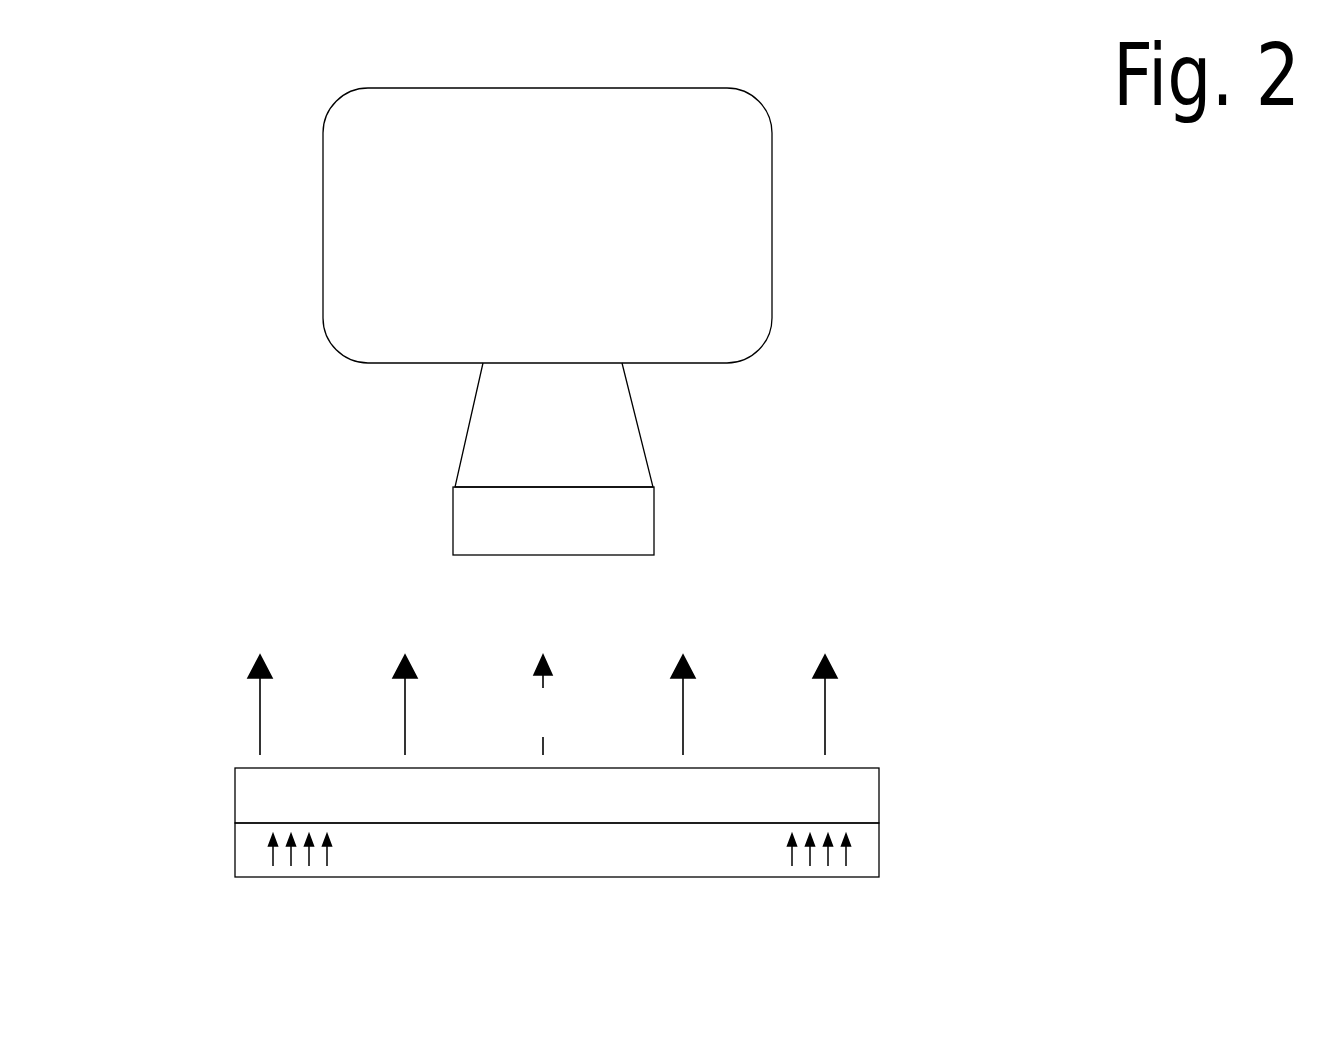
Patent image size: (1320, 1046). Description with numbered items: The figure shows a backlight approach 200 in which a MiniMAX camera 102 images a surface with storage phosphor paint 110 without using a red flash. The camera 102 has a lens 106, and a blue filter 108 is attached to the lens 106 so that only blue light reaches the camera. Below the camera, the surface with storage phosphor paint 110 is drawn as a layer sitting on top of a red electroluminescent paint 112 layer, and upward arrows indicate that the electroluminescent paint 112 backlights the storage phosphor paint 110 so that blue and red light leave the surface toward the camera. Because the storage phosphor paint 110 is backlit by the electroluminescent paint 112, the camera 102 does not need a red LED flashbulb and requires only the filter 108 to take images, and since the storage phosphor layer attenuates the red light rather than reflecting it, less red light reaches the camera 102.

The MiniMAX camera 102 is at (785, 198).
The lens 106 is at (460, 460).
The blue filter 108 is at (623, 560).
The surface with storage phosphor paint 110 is at (887, 802).
The electroluminescent paint 112 is at (845, 893).
The backlight approach 200 is at (1168, 300).